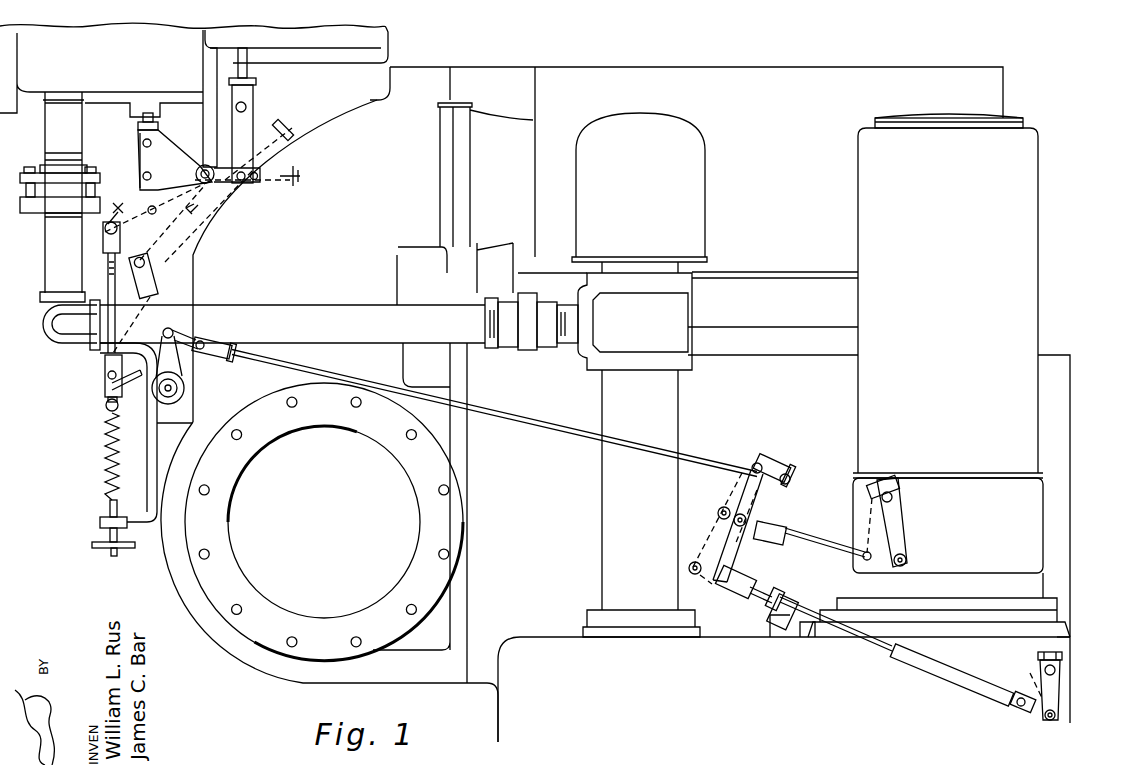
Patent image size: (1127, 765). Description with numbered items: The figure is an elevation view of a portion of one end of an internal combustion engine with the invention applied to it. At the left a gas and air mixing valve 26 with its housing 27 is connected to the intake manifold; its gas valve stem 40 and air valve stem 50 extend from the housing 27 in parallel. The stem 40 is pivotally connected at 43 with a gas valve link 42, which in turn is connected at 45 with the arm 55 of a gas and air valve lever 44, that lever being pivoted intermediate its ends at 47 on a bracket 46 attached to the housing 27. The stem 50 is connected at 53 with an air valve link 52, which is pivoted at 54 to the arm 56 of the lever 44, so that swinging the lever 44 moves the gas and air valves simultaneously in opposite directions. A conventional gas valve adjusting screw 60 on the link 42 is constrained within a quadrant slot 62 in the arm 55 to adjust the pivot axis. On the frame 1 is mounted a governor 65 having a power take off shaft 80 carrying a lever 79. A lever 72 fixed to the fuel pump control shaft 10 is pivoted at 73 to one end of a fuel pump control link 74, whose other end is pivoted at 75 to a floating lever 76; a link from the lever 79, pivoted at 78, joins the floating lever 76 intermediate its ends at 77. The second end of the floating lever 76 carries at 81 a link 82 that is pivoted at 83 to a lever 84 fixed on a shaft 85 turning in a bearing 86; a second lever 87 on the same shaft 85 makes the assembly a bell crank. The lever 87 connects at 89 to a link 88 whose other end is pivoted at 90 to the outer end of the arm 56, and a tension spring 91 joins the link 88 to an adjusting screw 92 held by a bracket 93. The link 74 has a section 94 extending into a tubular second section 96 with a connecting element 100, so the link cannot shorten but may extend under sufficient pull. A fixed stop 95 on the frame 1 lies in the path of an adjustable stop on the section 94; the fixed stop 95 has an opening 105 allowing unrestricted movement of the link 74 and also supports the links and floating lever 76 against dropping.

The frame 1 is at (1065, 642).
The fuel pump control shaft 10 is at (1055, 670).
The gas and air mixing valve 26 is at (34, 97).
The housing 27 is at (72, 80).
The valve stem 40 is at (250, 80).
The gas valve link 42 is at (254, 120).
The pivotal connection 43 is at (247, 107).
The gas and air valve lever 44 is at (197, 215).
The pivotal connection 45 is at (236, 183).
The bracket 46 is at (188, 138).
The pivotal connection 47 is at (196, 174).
The valve stem 50 is at (140, 125).
The air valve link 52 is at (140, 155).
The pivotal connection 53 is at (142, 143).
The pivotal connection 54 is at (142, 176).
The arm 55 is at (270, 148).
The arm 56 is at (118, 198).
The gas valve adjusting screw 60 is at (305, 172).
The quadrant slot 62 is at (255, 182).
The governor 65 is at (1040, 281).
The lever 72 is at (1028, 672).
The pivotal connection 73 is at (1050, 720).
The fuel pump control link 74 is at (886, 657).
The pivotal connection 75 is at (710, 580).
The floating lever 76 is at (735, 496).
The pivotal connection 77 is at (717, 513).
The pivotal connection 78 is at (907, 560).
The lever 79 is at (896, 530).
The power take off shaft 80 is at (893, 497).
The pivotal connection 81 is at (790, 450).
The link 82 is at (556, 430).
The pivotal connection 83 is at (205, 338).
The lever 84 is at (182, 378).
The shaft 85 is at (178, 388).
The bearing 86 is at (183, 402).
The second lever 87 is at (132, 398).
The link 88 is at (110, 278).
The connection 89 is at (106, 375).
The pivotal connection 90 is at (108, 240).
The tension spring 91 is at (104, 442).
The adjusting screw 92 is at (108, 512).
The bracket 93 is at (148, 470).
The section 94 is at (800, 614).
The fixed stop 95 is at (770, 620).
The second section 96 is at (941, 664).
The connecting element 100 is at (1032, 710).
The opening 105 is at (790, 593).